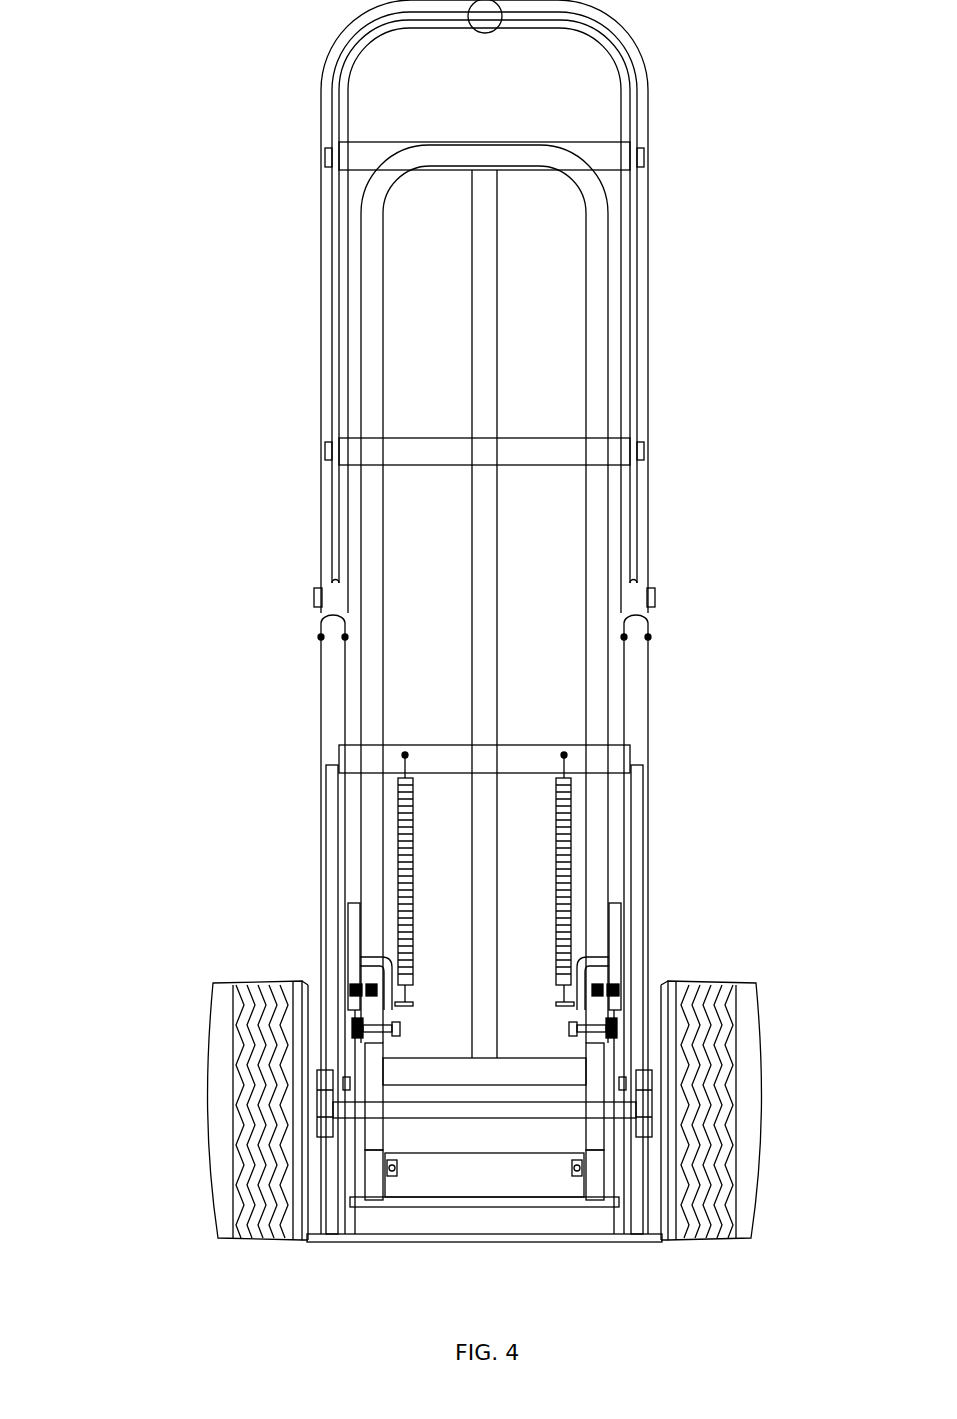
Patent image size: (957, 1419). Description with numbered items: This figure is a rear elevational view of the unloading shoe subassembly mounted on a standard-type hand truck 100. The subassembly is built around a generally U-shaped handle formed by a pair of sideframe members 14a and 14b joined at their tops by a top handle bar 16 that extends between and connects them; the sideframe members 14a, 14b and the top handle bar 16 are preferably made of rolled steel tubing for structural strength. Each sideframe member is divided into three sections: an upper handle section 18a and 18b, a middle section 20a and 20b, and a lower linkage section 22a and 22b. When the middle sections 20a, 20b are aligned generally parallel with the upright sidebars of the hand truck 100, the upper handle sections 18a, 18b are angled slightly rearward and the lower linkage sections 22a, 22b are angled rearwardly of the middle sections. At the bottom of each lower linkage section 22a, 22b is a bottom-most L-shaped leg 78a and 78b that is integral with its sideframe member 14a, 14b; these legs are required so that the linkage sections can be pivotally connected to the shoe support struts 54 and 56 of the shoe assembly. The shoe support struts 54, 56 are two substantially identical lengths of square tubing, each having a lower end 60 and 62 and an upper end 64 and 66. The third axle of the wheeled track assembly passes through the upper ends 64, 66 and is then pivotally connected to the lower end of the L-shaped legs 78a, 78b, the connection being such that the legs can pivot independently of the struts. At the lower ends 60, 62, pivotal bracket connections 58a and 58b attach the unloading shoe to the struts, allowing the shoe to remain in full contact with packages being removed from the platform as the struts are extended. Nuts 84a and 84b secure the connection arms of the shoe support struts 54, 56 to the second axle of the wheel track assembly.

The hand truck 100 is at (652, 262).
The top handle bar 16 is at (500, 155).
The upper handle section 18a is at (612, 305).
The upper handle section 18b is at (362, 247).
The sideframe member 14a is at (598, 472).
The sideframe member 14b is at (367, 485).
The middle section 20a is at (603, 598).
The middle section 20b is at (365, 570).
The lower linkage section 22a is at (600, 830).
The lower linkage section 22b is at (370, 860).
The L-shaped leg 78a is at (598, 978).
The L-shaped leg 78b is at (384, 955).
The nut 84a is at (608, 970).
The nut 84b is at (362, 962).
The upper end 66 is at (362, 1035).
The shoe support strut 56 is at (370, 1090).
The upper end 64 is at (602, 1055).
The lower end 62 is at (368, 1183).
The right lower bracket 60 is at (602, 1187).
The shoe support strut 54 is at (597, 1128).
The pivotal bracket connection 58a is at (582, 1163).
The pivotal bracket connection 58b is at (390, 1180).